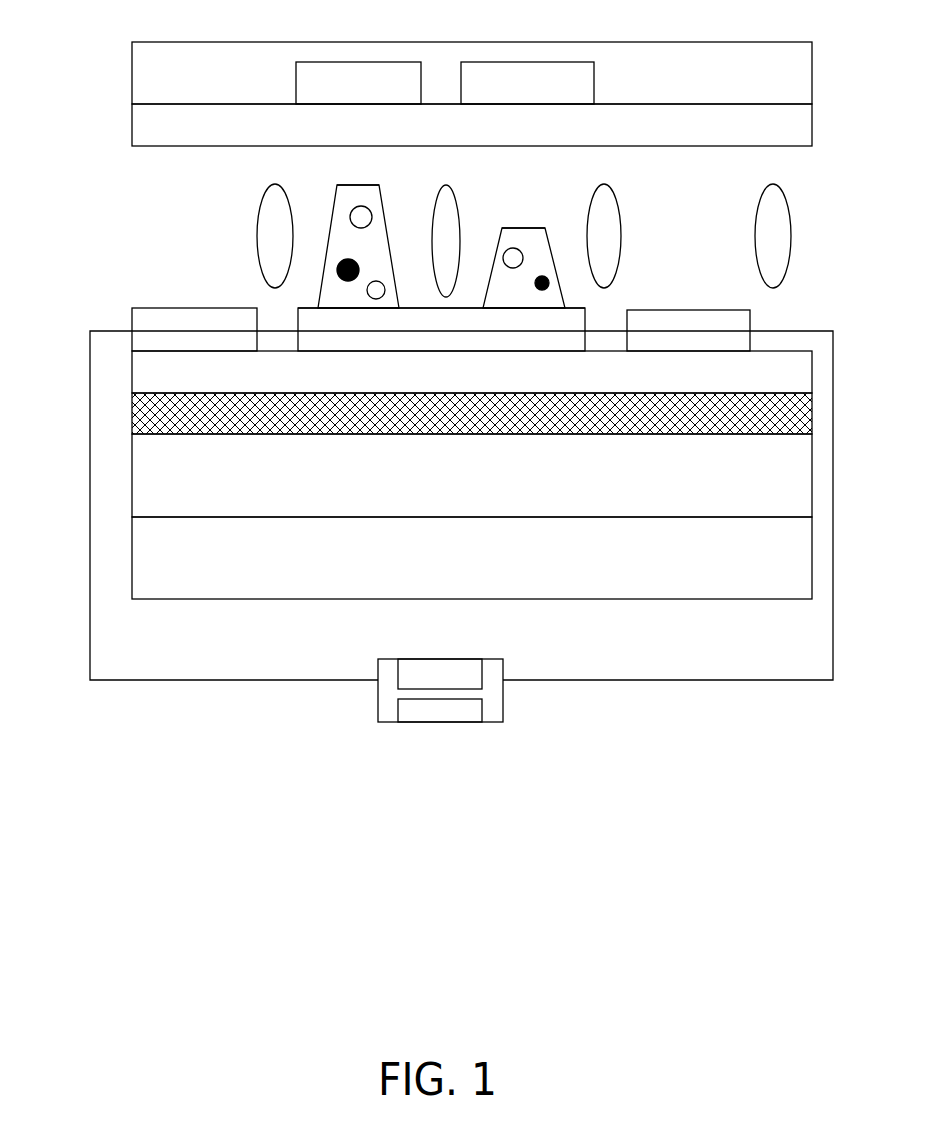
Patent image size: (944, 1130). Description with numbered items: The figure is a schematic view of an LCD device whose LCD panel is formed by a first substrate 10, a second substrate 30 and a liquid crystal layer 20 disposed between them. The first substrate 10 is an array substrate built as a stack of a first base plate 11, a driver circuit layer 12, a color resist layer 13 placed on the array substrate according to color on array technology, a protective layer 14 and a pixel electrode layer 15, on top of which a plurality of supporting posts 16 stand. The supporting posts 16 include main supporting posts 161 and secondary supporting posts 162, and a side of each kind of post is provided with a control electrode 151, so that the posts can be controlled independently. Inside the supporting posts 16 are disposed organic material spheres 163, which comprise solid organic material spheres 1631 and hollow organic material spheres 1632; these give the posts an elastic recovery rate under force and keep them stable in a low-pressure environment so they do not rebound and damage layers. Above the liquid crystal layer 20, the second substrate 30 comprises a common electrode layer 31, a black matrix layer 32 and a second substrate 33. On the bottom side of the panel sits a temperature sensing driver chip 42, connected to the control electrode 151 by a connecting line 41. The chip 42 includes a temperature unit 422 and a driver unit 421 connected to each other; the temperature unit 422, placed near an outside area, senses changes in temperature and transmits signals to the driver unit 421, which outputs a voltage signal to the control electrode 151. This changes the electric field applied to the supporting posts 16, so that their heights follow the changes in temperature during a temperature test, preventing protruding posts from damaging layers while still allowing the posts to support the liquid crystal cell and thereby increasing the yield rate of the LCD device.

The first substrate 10 is at (469, 576).
The first base plate 11 is at (783, 562).
The driver circuit layer 12 is at (783, 495).
The color resist layer 13 is at (800, 415).
The protective layer 14 is at (787, 372).
The pixel electrode layer 15 is at (740, 320).
The control electrode 151 is at (325, 328).
The supporting posts 16 is at (295, 576).
The main supporting posts 161 is at (352, 240).
The secondary supporting posts 162 is at (503, 228).
The organic material spheres 163 is at (287, 572).
The solid organic material spheres 1631 is at (338, 270).
The hollow organic material spheres 1632 is at (357, 217).
The liquid crystal layer 20 is at (778, 248).
The second substrate 30 is at (512, 473).
The common electrode layer 31 is at (778, 124).
The black matrix layer 32 is at (585, 75).
The second substrate 33 is at (770, 62).
The connecting line 41 is at (90, 497).
The temperature sensing driver chip 42 is at (545, 791).
The driver unit 421 is at (460, 672).
The temperature unit 422 is at (452, 712).